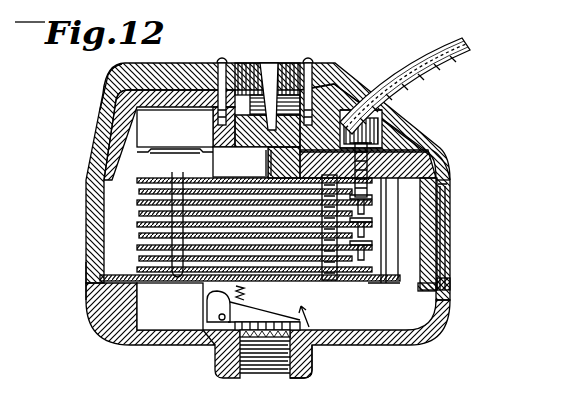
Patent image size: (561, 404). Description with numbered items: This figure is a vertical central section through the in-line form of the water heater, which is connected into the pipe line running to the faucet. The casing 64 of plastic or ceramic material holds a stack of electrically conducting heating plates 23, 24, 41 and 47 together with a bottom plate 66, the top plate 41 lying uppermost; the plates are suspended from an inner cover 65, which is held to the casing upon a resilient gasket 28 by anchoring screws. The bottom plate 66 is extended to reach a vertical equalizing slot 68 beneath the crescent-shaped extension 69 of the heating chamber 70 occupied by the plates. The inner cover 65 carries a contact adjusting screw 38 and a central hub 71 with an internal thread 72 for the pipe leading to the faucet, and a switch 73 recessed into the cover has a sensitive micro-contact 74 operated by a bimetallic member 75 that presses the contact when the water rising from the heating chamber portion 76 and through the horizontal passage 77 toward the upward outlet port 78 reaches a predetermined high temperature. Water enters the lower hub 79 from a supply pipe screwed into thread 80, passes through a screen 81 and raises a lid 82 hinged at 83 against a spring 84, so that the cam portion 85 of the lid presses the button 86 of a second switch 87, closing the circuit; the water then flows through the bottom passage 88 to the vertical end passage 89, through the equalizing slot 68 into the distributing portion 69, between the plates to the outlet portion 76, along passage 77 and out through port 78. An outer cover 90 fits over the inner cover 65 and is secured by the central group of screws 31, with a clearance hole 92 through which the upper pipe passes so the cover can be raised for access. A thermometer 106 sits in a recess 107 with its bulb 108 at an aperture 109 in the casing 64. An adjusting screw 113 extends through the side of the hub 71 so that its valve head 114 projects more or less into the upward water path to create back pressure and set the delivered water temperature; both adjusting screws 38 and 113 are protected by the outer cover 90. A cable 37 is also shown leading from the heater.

The heating plate 23 is at (137, 191).
The heating plate 24 is at (137, 266).
The gasket 28 is at (440, 183).
The central group of screws 31 is at (220, 61).
The cable 37 is at (447, 57).
The contact adjusting screw 38 is at (402, 134).
The top plate 41 is at (102, 183).
The heating plate 47 is at (87, 281).
The casing 64 is at (103, 325).
The inner cover 65 is at (441, 163).
The bottom plate 66 is at (377, 282).
The vertical equalizing slot 68 is at (386, 228).
The crescent-shaped extension 69 is at (387, 214).
The heating chamber 70 is at (370, 275).
The central hub 71 is at (353, 127).
The internal thread 72 is at (270, 66).
The switch 73 is at (175, 128).
The micro-contact 74 is at (240, 162).
The bimetallic member 75 is at (179, 157).
The heating chamber portion 76 is at (137, 236).
The passage 77 is at (125, 163).
The outlet port 78 is at (221, 213).
The lower hub 79 is at (313, 372).
The thread 80 is at (257, 346).
The screen 81 is at (268, 340).
The lid 82 is at (277, 324).
The hinge 83 is at (210, 344).
The spring 84 is at (234, 298).
The cam portion 85 is at (210, 300).
The button 86 is at (215, 307).
The second switch 87 is at (170, 306).
The bottom passage 88 is at (319, 313).
The vertical end passage 89 is at (387, 248).
The outer cover 90 is at (96, 121).
The clearance hole 92 is at (250, 66).
The thermometer 106 is at (447, 231).
The recess 107 is at (446, 199).
The bulb 108 is at (448, 281).
The aperture 109 is at (416, 286).
The adjusting screw 113 is at (358, 95).
The valve head 114 is at (283, 66).